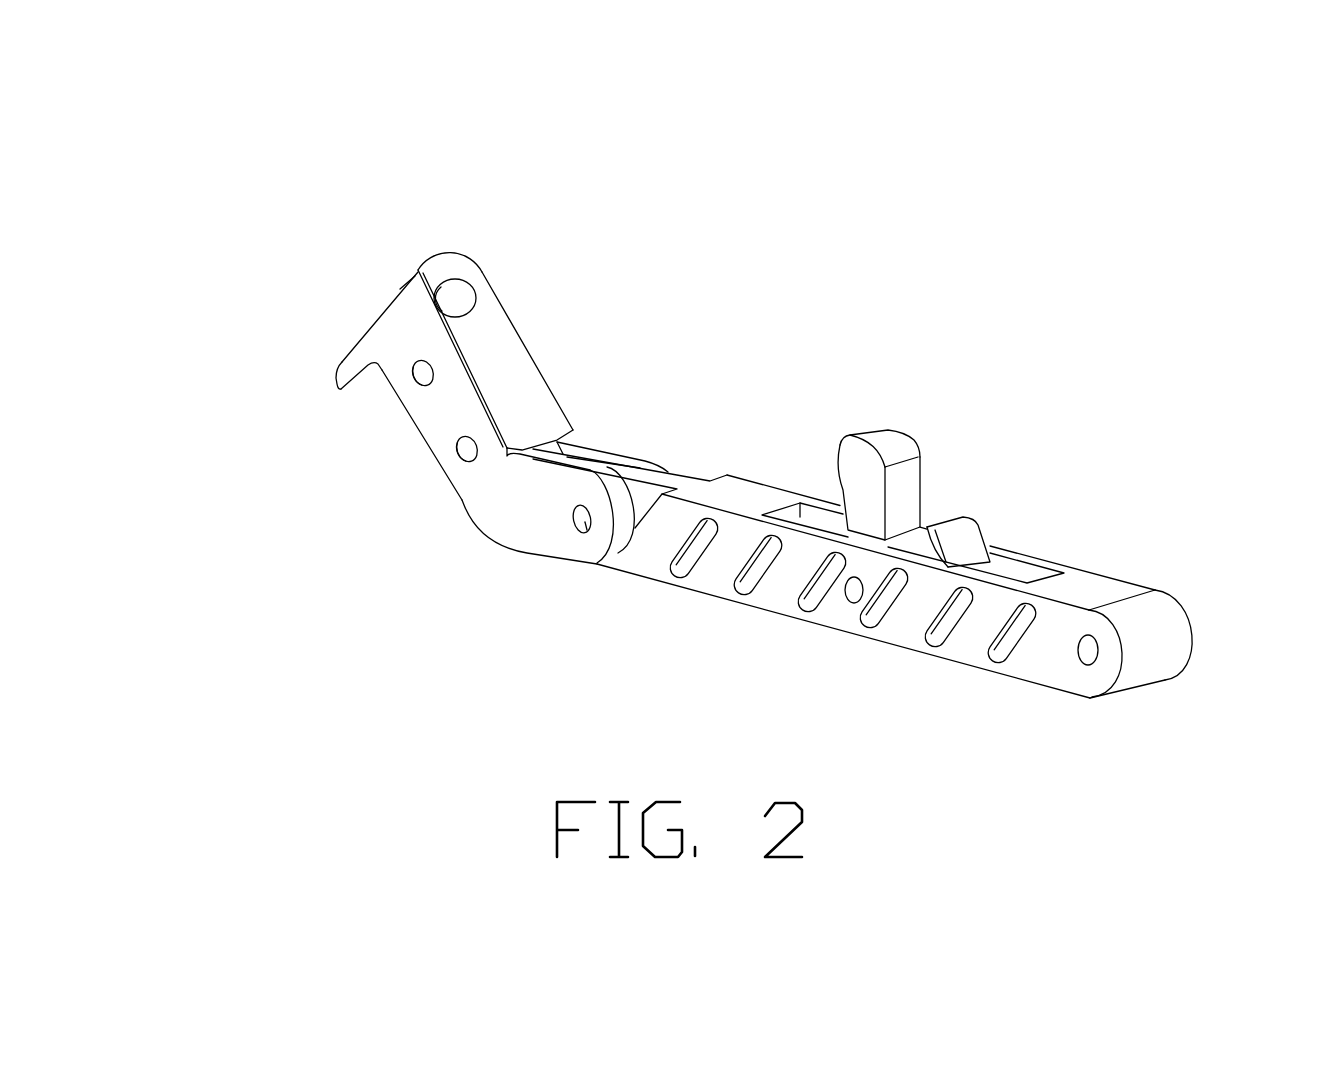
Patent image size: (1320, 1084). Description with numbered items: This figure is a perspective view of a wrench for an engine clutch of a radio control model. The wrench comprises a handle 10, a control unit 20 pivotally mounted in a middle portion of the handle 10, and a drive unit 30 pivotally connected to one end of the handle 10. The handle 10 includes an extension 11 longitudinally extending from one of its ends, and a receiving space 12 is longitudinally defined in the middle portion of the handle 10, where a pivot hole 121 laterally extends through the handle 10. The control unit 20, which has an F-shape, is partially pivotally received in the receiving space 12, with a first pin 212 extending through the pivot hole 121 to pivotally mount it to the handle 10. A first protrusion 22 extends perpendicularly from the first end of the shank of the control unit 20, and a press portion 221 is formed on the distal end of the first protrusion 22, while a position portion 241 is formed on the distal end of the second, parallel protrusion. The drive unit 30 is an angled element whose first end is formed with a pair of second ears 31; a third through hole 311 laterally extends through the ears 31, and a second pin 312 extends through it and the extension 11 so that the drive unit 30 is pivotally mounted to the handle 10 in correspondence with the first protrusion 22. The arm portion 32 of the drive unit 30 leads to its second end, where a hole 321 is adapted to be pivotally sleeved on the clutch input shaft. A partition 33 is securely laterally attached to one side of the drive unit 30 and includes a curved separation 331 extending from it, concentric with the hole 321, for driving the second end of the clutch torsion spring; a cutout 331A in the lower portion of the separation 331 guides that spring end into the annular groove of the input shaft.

The handle 10 is at (1150, 565).
The extension 11 is at (677, 468).
The receiving space 12 is at (1013, 570).
The pivot hole 121 is at (860, 590).
The control unit 20 is at (952, 473).
The first pin 212 is at (857, 600).
The first protrusion 22 is at (902, 495).
The press portion 221 is at (880, 428).
The position portion 241 is at (967, 517).
The drive unit 30 is at (560, 317).
The second ears 31 is at (622, 445).
The third through hole 311 is at (580, 522).
The second pin 312 is at (583, 518).
The arm 32 is at (517, 400).
The hole 321 is at (420, 303).
The partition 33 is at (433, 417).
The curved separation 331 is at (388, 302).
The cutout 331A is at (333, 365).